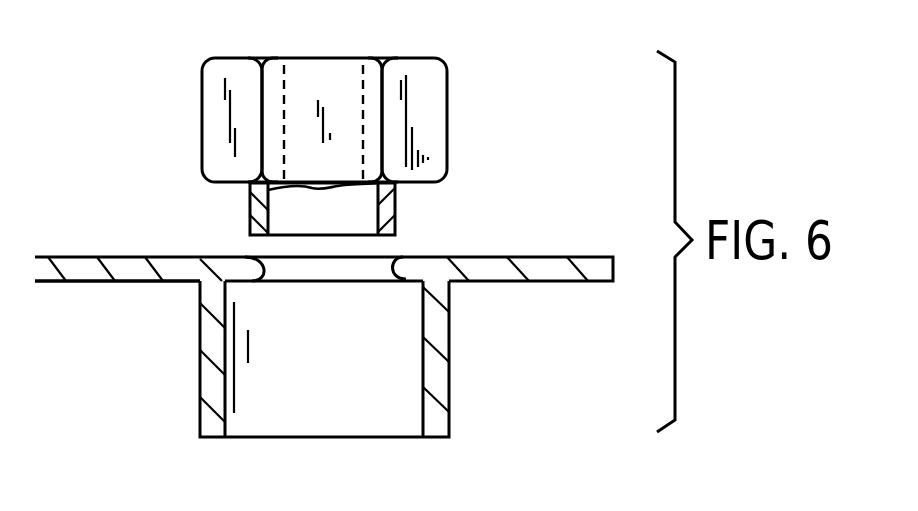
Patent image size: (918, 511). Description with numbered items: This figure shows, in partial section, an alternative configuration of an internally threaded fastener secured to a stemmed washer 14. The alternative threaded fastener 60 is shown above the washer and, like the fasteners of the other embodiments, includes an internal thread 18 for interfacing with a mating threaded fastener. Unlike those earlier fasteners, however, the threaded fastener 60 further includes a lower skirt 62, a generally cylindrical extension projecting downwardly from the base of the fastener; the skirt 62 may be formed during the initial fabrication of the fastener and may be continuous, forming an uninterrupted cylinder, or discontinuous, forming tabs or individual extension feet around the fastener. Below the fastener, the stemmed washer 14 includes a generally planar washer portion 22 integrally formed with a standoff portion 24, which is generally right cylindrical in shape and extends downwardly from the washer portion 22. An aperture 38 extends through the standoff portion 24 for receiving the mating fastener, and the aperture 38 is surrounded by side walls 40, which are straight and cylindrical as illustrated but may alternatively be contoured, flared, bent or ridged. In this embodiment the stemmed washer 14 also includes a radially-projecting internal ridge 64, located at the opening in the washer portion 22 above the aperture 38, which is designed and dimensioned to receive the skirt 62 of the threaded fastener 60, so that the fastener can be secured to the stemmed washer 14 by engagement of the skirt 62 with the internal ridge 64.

The stemmed washer 14 is at (123, 263).
The internal thread 18 is at (287, 97).
The washer portion 22 is at (100, 287).
The standoff portion 24 is at (200, 397).
The aperture 38 is at (278, 420).
The side walls 40 is at (213, 338).
The threaded fastener 60 is at (434, 128).
The skirt 62 is at (392, 212).
The internal ridge 64 is at (262, 264).